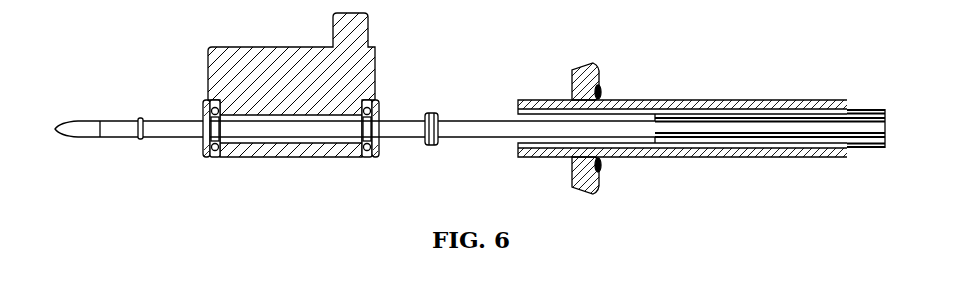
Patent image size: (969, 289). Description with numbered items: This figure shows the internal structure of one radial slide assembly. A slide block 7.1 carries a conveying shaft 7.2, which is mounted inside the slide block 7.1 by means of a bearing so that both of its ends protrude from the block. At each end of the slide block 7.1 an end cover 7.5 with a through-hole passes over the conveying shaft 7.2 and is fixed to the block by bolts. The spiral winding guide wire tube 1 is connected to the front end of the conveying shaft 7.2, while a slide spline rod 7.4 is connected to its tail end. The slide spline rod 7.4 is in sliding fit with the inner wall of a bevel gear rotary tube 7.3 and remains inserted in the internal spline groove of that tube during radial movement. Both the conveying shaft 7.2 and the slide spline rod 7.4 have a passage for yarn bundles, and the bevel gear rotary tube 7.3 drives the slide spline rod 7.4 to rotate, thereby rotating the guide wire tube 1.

The spiral winding guide wire tube 1 is at (107, 123).
The slide block 7.1 is at (368, 76).
The conveying shaft 7.2 is at (407, 122).
The bevel gear rotary tube 7.3 is at (606, 99).
The slide spline rod 7.4 is at (847, 143).
The end cover 7.5 is at (373, 157).